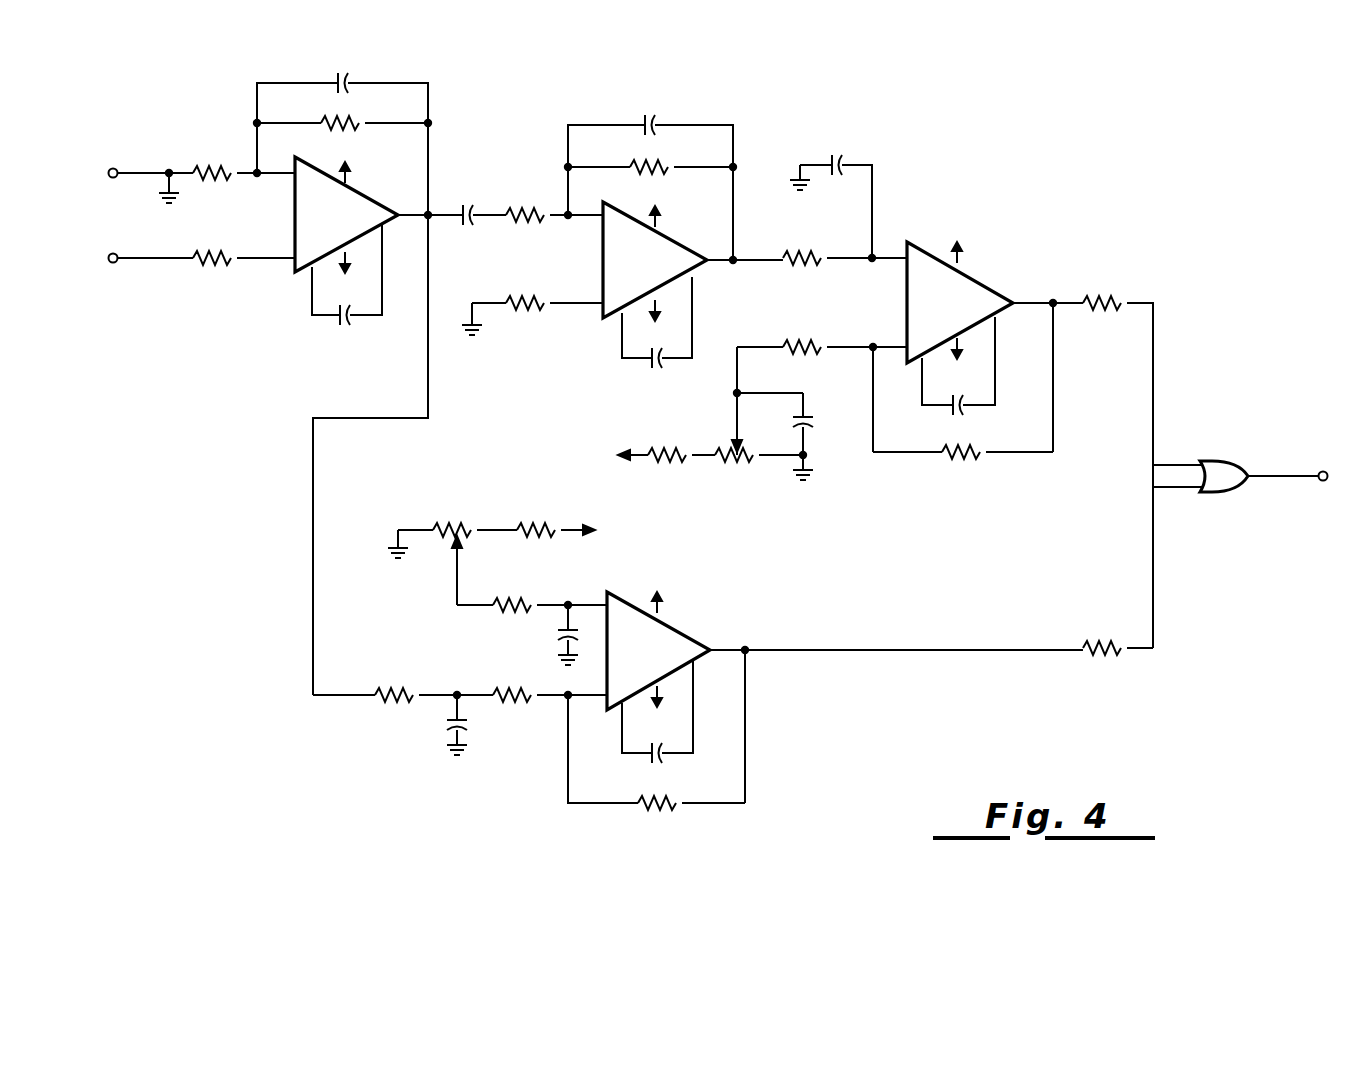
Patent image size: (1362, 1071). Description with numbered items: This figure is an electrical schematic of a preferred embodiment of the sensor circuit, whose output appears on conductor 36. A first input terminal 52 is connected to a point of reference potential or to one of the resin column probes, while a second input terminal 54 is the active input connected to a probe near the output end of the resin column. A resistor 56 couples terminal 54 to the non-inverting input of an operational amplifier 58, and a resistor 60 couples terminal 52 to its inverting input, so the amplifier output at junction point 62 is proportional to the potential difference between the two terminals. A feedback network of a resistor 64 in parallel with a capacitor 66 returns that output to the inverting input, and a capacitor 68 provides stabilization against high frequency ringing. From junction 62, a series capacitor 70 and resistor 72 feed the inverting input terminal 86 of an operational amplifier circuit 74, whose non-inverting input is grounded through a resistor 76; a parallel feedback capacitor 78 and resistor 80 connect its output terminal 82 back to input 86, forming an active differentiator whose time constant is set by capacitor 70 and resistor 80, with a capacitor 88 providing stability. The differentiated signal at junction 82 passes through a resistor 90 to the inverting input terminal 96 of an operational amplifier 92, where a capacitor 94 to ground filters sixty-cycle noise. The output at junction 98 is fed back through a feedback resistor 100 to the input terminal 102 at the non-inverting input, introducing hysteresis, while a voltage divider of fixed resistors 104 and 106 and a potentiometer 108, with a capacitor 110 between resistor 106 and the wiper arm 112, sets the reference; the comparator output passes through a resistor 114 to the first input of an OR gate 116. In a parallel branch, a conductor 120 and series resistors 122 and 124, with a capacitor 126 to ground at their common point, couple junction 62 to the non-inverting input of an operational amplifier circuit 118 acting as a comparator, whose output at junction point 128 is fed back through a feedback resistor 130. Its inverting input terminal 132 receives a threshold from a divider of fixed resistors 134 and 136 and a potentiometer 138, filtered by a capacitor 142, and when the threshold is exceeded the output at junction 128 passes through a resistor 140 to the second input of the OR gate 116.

The conductor 36 is at (1321, 481).
The first input terminal 52 is at (111, 171).
The second input terminal 54 is at (110, 262).
The resistor 56 is at (215, 256).
The operational amplifier 58 is at (362, 190).
The resistor 60 is at (214, 168).
The junction point 62 is at (430, 218).
The resistor 64 is at (352, 118).
The capacitor 66 is at (344, 74).
The capacitor 68 is at (348, 324).
The capacitor 70 is at (468, 203).
The resistor 72 is at (522, 211).
The operational amplifier circuit 74 is at (670, 237).
The resistor 76 is at (536, 299).
The capacitor 78 is at (654, 115).
The resistor 80 is at (657, 160).
The output terminal 82 is at (736, 263).
The inverting input terminal 86 is at (568, 219).
The capacitor 88 is at (657, 364).
The resistor 90 is at (807, 254).
The operational amplifier 92 is at (972, 277).
The capacitor 94 is at (840, 155).
The inverting input terminal 96 is at (872, 261).
The junction 98 is at (1055, 298).
The feedback resistor 100 is at (964, 462).
The input terminal 102 is at (876, 344).
The fixed resistor 104 is at (665, 461).
The fixed resistor 106 is at (799, 343).
The potentiometer 108 is at (737, 461).
The capacitor 110 is at (814, 424).
The wiper arm 112 is at (735, 394).
The resistor 114 is at (1111, 297).
The OR gate 116 is at (1222, 461).
The operational amplifier circuit 118 is at (672, 625).
The conductor 120 is at (313, 460).
The resistor 122 is at (394, 690).
The resistor 124 is at (512, 690).
The capacitor 126 is at (445, 725).
The junction point 128 is at (748, 650).
The feedback resistor 130 is at (660, 807).
The inverting input terminal 132 is at (568, 603).
The fixed resistor 134 is at (551, 528).
The fixed resistor 136 is at (512, 598).
The potentiometer 138 is at (456, 528).
The resistor 140 is at (1110, 654).
The capacitor 142 is at (556, 638).